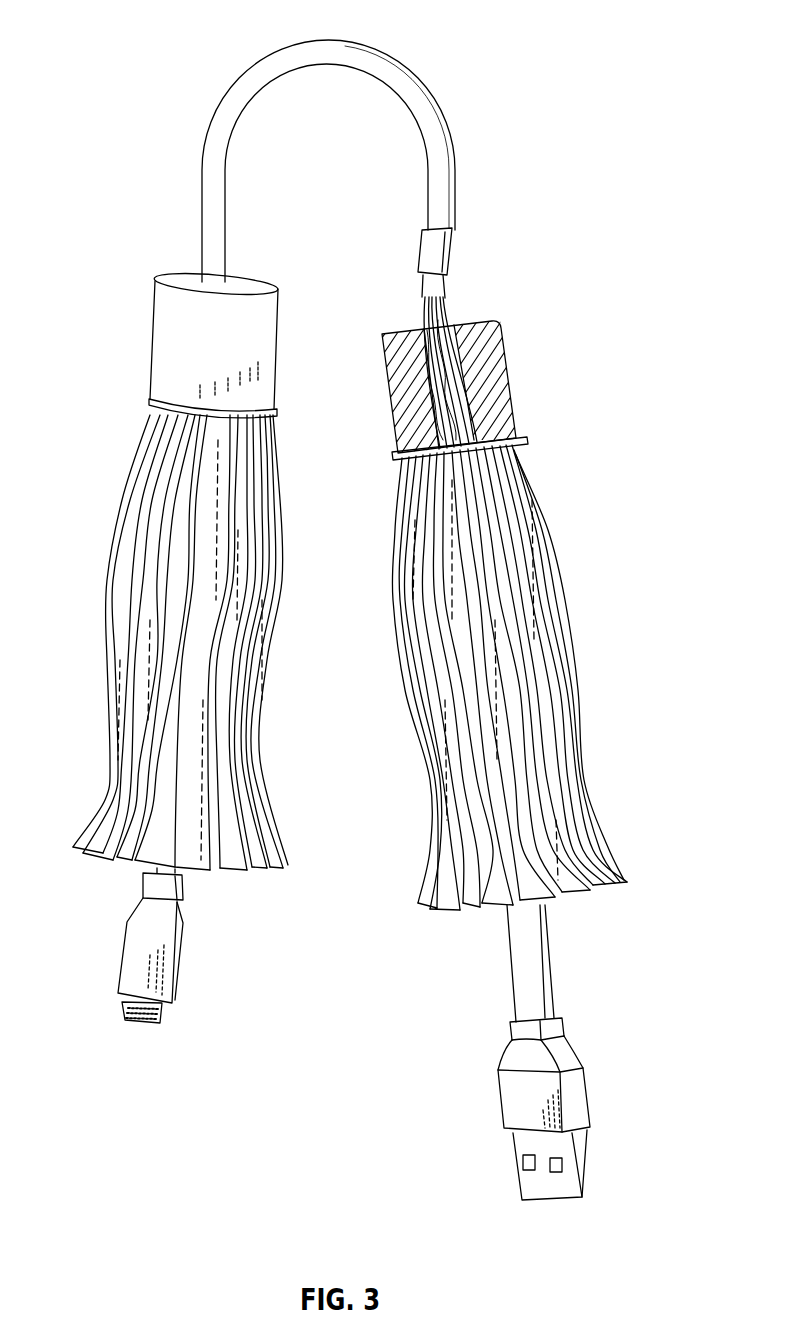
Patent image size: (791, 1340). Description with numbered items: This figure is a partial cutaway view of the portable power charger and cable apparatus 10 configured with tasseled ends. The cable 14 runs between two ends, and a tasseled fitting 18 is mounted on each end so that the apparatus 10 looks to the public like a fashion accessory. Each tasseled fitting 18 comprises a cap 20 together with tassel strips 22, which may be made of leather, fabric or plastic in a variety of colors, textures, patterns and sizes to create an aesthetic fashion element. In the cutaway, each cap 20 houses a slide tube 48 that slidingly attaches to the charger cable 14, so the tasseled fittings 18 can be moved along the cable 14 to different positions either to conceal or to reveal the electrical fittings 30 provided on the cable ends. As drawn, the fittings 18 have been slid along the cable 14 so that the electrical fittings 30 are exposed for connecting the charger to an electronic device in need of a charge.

The portable power charger and cable apparatus 10 is at (128, 40).
The cable 14 is at (446, 306).
The tasseled fitting 18 is at (586, 273).
The cap 20 is at (160, 347).
The tassel strips 22 is at (540, 518).
The electrical fittings 30 is at (93, 935).
The slide tube 48 is at (418, 372).